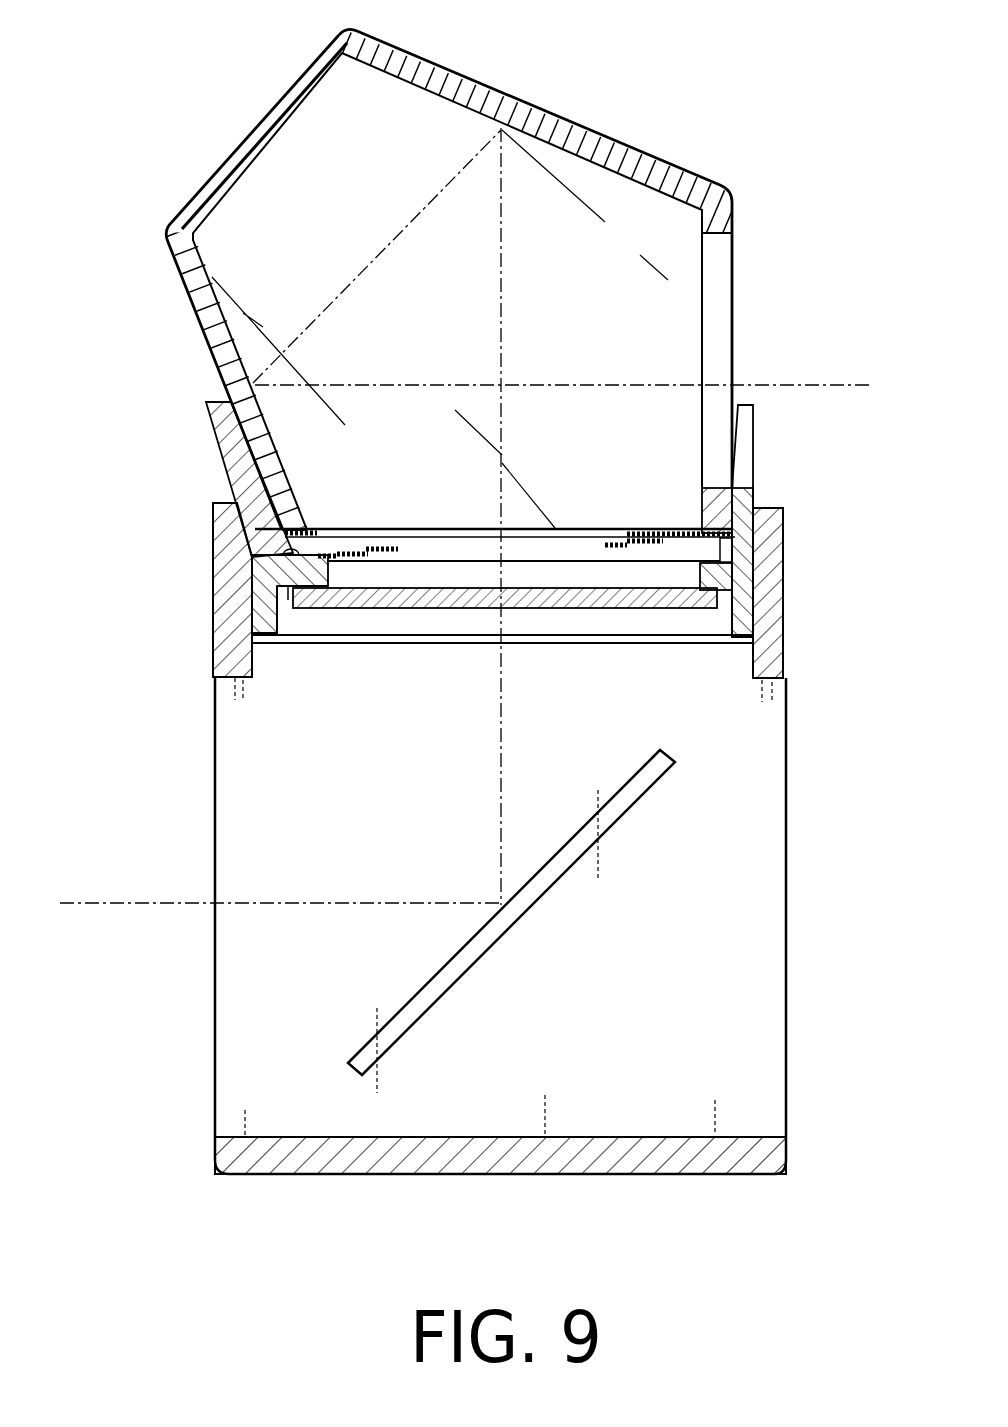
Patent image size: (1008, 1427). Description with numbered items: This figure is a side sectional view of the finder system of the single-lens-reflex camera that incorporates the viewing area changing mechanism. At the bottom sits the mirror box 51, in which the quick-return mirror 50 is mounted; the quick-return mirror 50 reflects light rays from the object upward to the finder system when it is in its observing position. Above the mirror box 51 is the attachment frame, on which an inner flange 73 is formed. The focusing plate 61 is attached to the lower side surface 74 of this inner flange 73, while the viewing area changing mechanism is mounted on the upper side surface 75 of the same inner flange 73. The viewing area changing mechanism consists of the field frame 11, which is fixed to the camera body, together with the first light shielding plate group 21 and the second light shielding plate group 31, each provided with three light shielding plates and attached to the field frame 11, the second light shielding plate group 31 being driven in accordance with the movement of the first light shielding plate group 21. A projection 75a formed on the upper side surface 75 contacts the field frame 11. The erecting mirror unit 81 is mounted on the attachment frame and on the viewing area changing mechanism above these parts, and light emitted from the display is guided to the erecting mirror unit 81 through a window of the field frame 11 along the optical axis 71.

The erecting mirror unit 81 is at (545, 137).
The optical axis 71 is at (220, 440).
The lower side surface 74 is at (285, 590).
The inner flange 73 is at (330, 567).
The upper side surface 75 is at (295, 552).
The projection 75a is at (725, 548).
The field frame 11 is at (703, 531).
The first light shielding plate group 21 is at (625, 537).
The second light shielding plate group 31 is at (398, 537).
The focusing plate 61 is at (583, 607).
The quick-return mirror 50 is at (418, 998).
The mirror box 51 is at (767, 978).